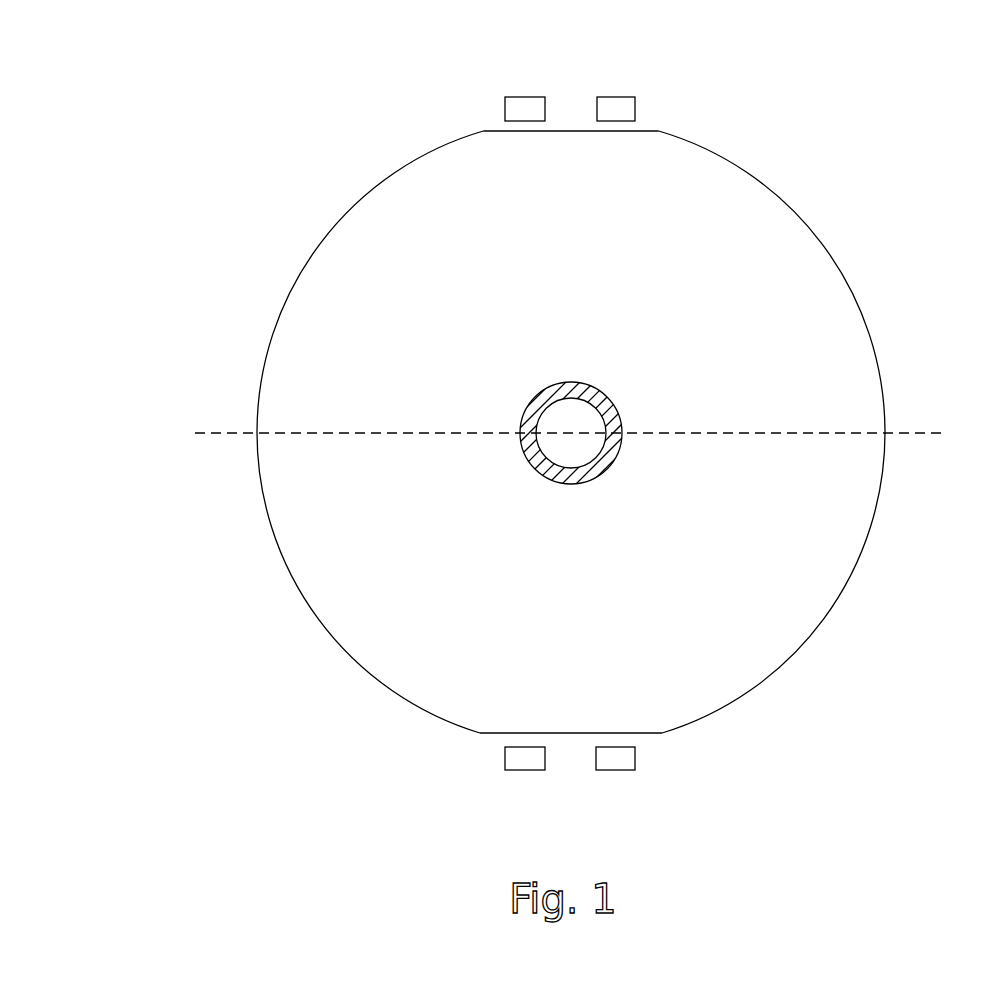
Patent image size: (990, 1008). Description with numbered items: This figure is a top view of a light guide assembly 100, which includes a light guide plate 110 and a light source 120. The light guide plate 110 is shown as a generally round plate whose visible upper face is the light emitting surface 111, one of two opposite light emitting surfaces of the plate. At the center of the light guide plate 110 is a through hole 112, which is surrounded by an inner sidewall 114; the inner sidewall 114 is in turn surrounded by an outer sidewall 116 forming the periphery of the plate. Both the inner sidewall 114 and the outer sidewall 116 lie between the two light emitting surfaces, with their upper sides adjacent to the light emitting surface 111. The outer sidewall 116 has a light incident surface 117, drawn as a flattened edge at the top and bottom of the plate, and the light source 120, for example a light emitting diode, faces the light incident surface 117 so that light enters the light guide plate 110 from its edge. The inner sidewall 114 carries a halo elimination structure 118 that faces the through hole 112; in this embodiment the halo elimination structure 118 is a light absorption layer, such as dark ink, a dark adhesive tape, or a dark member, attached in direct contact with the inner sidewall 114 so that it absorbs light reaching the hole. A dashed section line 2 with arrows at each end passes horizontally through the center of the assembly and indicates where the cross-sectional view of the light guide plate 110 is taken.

The light guide assembly 100 is at (133, 31).
The light guide plate 110 is at (745, 208).
The light emitting surface 111 is at (345, 272).
The through hole 112 is at (597, 452).
The inner sidewall 114 is at (622, 405).
The outer sidewall 116 is at (269, 344).
The light incident surface 117 is at (650, 129).
The halo elimination structure 118 is at (598, 387).
The light source 120 is at (617, 107).
The line 2- 2 is at (195, 437).